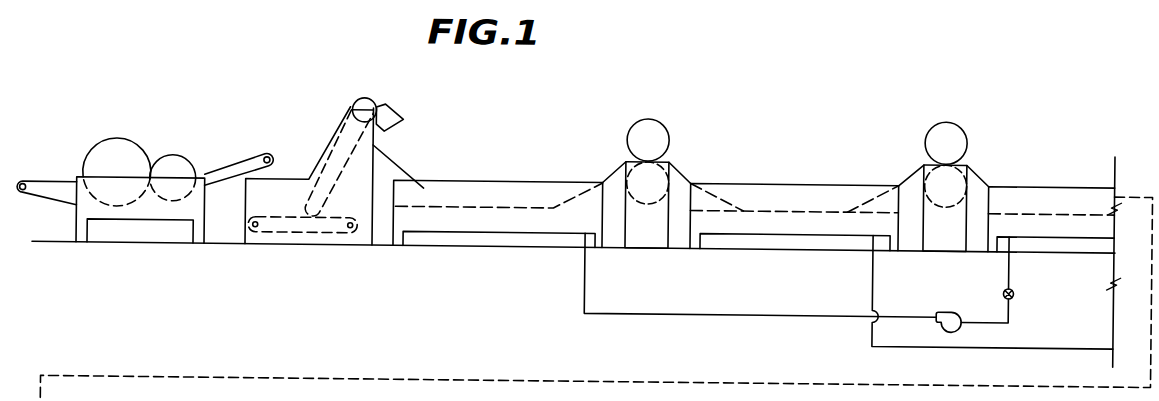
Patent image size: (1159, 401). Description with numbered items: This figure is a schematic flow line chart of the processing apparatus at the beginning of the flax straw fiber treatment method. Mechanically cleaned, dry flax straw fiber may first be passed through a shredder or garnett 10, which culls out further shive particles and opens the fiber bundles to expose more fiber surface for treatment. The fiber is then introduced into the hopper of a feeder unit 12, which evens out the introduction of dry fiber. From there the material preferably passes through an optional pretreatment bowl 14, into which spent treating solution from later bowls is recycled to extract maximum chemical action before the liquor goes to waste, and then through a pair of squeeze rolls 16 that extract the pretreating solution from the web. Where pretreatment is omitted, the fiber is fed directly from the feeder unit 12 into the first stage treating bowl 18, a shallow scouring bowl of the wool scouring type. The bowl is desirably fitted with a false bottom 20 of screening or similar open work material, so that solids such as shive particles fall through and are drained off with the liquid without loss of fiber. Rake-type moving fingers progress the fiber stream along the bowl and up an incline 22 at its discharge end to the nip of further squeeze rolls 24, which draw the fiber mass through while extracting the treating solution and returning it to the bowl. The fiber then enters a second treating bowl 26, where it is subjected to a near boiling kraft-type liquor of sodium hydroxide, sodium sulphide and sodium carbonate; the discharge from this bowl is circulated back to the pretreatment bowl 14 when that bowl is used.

The shredder or garnett 10 is at (123, 138).
The feeder unit 12 is at (283, 175).
The pretreatment bowl 14 is at (487, 175).
The squeeze rolls 16 is at (653, 116).
The first stage treating bowl 18 is at (786, 176).
The false bottom 20 is at (823, 204).
The incline 22 is at (913, 169).
The squeeze rolls 24 is at (952, 113).
The second treating bowl 26 is at (1048, 178).